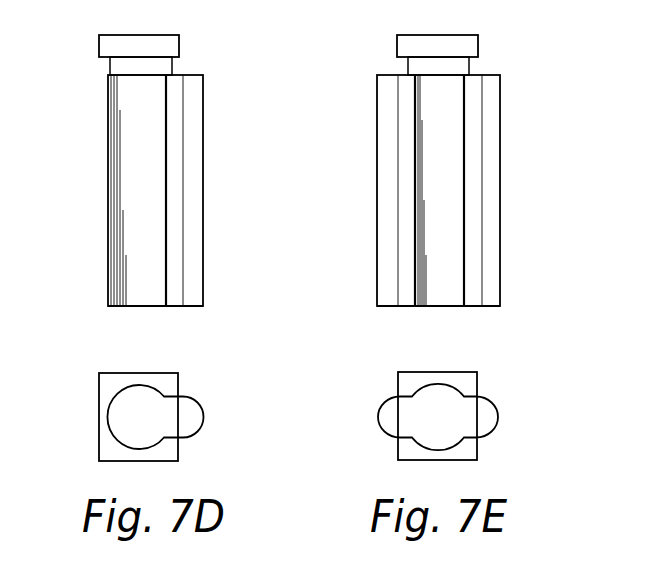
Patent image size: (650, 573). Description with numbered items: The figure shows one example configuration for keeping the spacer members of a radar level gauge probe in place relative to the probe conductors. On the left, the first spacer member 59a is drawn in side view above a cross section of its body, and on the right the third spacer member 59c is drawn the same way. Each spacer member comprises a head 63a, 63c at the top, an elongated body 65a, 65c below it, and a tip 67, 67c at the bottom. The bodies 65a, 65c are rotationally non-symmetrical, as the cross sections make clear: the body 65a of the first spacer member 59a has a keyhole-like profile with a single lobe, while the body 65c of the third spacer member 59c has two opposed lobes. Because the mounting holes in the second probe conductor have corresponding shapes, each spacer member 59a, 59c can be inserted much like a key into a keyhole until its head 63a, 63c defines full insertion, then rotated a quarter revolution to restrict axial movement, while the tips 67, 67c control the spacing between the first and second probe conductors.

In FIG. 7D, the first spacer member 59a is at (163, 248).
In FIG. 7D, the head 63a is at (110, 47).
In FIG. 7D, the body 65a is at (145, 183).
In FIG. 7D, the tip 67 is at (142, 308).
In FIG. 7E, the third spacer member 59c is at (437, 248).
In FIG. 7E, the head 63c is at (405, 48).
In FIG. 7E, the body 65c is at (404, 190).
In FIG. 7E, the tip 67c is at (435, 308).